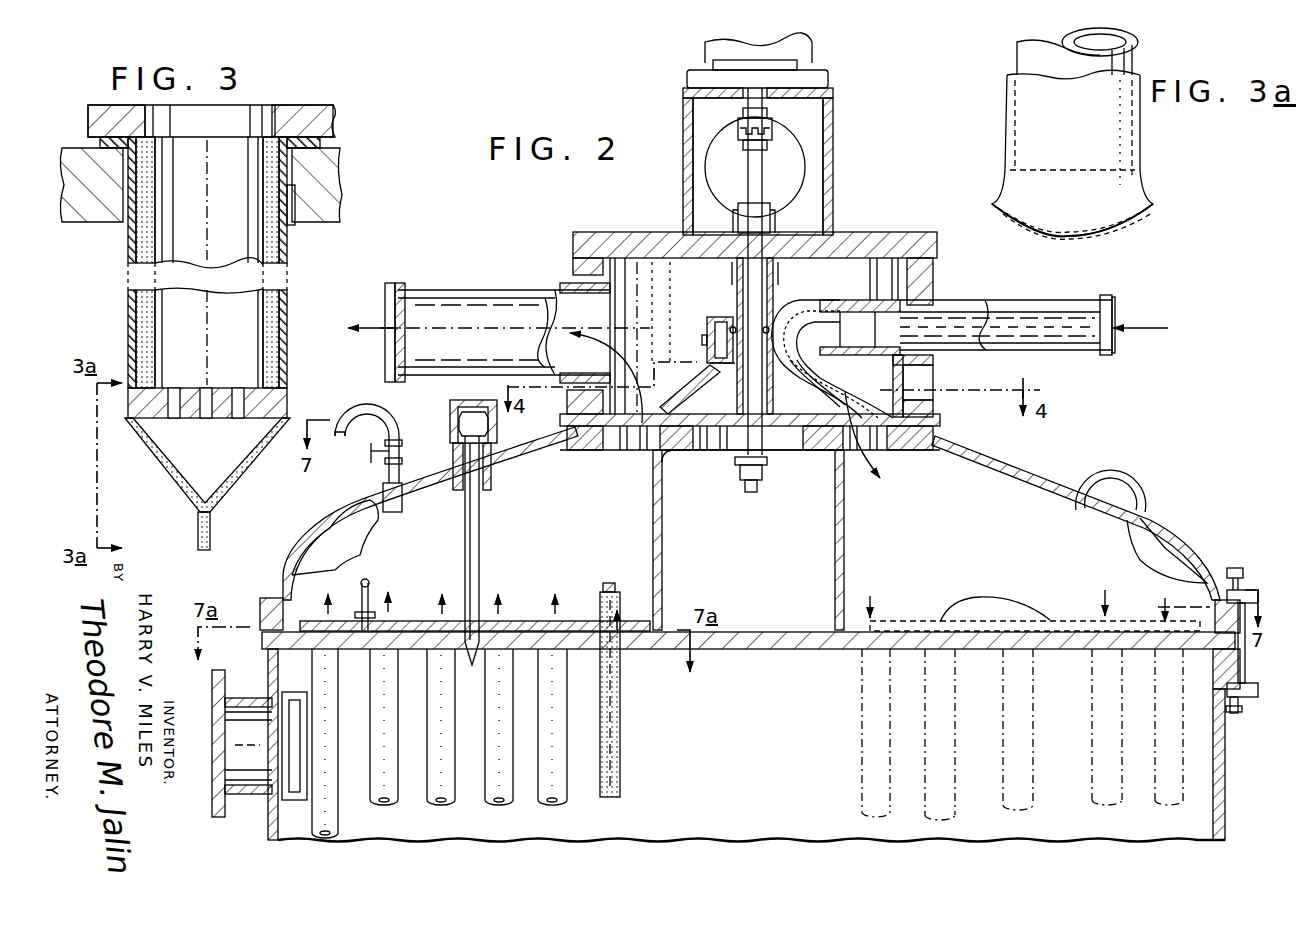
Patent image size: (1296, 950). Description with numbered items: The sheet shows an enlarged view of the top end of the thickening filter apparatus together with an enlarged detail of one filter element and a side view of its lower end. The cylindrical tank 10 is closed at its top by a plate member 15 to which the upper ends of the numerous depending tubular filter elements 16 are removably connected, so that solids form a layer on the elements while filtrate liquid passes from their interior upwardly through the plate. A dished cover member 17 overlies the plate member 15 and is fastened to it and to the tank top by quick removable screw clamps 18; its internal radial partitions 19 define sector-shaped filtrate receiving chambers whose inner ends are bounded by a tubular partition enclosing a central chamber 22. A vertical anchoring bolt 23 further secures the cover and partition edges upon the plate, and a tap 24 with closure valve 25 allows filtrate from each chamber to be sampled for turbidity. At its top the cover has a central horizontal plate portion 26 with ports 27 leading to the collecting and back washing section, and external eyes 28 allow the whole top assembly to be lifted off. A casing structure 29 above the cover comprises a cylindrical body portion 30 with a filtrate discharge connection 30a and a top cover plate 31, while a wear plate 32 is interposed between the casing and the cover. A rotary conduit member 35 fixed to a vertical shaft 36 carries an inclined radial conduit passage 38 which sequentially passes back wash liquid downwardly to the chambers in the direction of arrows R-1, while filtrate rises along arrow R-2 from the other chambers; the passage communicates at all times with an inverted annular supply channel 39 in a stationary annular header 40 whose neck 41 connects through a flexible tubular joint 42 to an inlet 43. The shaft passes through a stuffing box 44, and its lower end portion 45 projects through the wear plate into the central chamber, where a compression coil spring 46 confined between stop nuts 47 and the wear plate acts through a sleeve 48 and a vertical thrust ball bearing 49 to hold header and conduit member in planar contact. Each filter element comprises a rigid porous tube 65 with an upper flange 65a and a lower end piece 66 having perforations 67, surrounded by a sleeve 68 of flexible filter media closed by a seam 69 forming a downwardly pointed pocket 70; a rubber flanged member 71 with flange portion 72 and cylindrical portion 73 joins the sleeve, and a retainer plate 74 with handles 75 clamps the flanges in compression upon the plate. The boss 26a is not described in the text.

In FIG. 2, the cylindrical tank 10 is at (1222, 772).
In FIG. 2, the plate member 15 is at (765, 650).
In FIG. 2, the tubular filter elements 16 is at (630, 745).
In FIG. 2, the dished cover member 17 is at (1018, 462).
In FIG. 2, the screw clamps 18 is at (1246, 700).
In FIG. 2, the internal radial partitions 19 is at (360, 552).
In FIG. 2, the central chamber 22 is at (748, 540).
In FIG. 2, the anchoring bolt 23 is at (480, 540).
In FIG. 2, the tap 24 is at (382, 414).
In FIG. 2, the closure valve 25 is at (369, 455).
In FIG. 2, the central horizontal plate portion 26 is at (920, 442).
In FIG. 2, the boss 26a is at (575, 425).
In FIG. 2, the ports 27 is at (640, 450).
In FIG. 2, the external eyes 28 is at (1146, 492).
In FIG. 2, the casing structure 29 is at (940, 252).
In FIG. 2, the cylindrical body portion 30 is at (930, 298).
In FIG. 2, the filtrate discharge connection 30a is at (462, 290).
In FIG. 2, the top cover plate 31 is at (850, 246).
In FIG. 2, the wear plate 32 is at (918, 420).
In FIG. 2, the rotary conduit member 35 is at (688, 385).
In FIG. 2, the vertical shaft 36 is at (763, 185).
In FIG. 2, the inclined radial conduit passage 38 is at (818, 387).
In FIG. 2, the inverted annular supply channel 39 is at (722, 318).
In FIG. 2, the stationary annular header 40 is at (737, 317).
In FIG. 2, the neck 41 is at (797, 303).
In FIG. 2, the flexible tubular joint 42 is at (868, 303).
In FIG. 2, the inlet 43 is at (1018, 302).
In FIG. 2, the stuffing box 44 is at (770, 206).
In FIG. 2, the lower end portion 45 is at (735, 450).
In FIG. 2, the compression coil spring 46 is at (740, 465).
In FIG. 2, the stop nuts 47 is at (745, 488).
In FIG. 2, the sleeve 48 is at (768, 326).
In FIG. 2, the vertical thrust ball bearing 49 is at (792, 325).
In FIG. 3, the rigid tube 65 is at (262, 175).
In FIG. 3A, the rigid tube 65 is at (1130, 58).
In FIG. 3, the flange 65a is at (100, 140).
In FIG. 3, the end piece 66 is at (220, 388).
In FIG. 3, the perforations 67 is at (238, 418).
In FIG. 3, the sleeve of flexible porous filter media 68 is at (289, 312).
In FIG. 3A, the sleeve of flexible porous filter media 68 is at (1005, 105).
In FIG. 3, the seam 69 is at (212, 525).
In FIG. 3A, the seam 69 is at (1095, 228).
In FIG. 3, the downwardly pointed pocket 70 is at (222, 462).
In FIG. 3, the flanged member 71 is at (326, 177).
In FIG. 3, the flange portion 72 is at (320, 143).
In FIG. 3, the cylindrical portion 73 is at (295, 225).
In FIG. 3, the retainer plate 74 is at (298, 107).
In FIG. 2, the retainer plate 74 is at (520, 620).
In FIG. 2, the handles 75 is at (582, 585).
In FIG. 2, the back wash flow arrows R-1 is at (900, 498).
In FIG. 2, the filtrate flow arrow R-2 is at (620, 340).